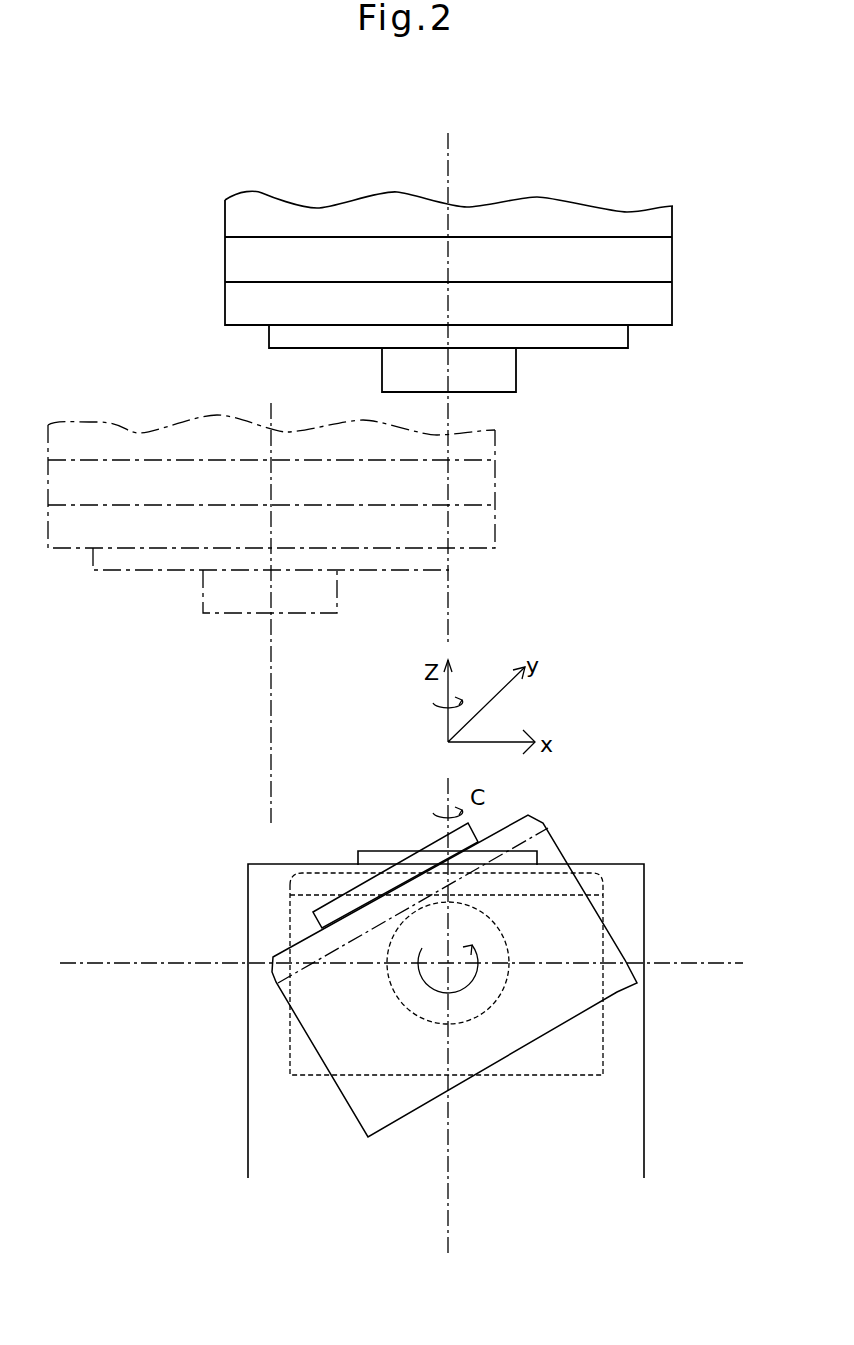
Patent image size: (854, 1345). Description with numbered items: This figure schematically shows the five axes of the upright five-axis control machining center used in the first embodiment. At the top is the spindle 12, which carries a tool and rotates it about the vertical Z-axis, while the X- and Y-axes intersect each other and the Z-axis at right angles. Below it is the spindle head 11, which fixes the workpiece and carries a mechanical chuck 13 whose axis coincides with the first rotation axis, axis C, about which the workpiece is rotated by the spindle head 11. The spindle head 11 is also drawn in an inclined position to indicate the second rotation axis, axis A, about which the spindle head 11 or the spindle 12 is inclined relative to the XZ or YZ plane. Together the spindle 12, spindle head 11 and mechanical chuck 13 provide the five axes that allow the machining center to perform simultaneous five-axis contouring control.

The spindle head 11 is at (617, 992).
The spindle 12 is at (647, 312).
The mechanical chuck 13 is at (423, 848).